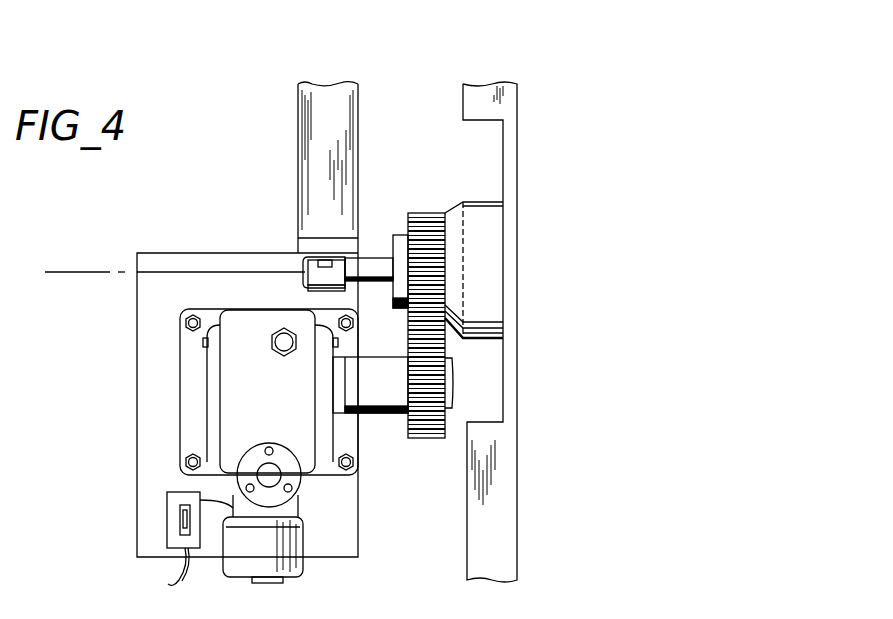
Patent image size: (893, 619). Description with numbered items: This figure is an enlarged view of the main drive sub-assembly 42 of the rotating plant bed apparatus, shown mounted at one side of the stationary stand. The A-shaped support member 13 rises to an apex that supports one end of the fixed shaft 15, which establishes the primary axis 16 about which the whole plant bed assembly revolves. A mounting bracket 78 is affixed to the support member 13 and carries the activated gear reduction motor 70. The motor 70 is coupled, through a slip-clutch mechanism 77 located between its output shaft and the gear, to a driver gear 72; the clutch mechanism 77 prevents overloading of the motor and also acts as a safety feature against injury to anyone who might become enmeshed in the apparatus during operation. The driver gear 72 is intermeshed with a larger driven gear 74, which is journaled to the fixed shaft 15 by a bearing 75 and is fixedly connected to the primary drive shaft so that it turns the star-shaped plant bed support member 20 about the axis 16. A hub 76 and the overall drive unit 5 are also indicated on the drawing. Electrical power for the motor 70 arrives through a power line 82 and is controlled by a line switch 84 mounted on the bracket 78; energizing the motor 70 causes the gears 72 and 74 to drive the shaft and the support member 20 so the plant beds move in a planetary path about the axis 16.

The drive assembly 5 is at (252, 52).
The A-shaped support member 13 is at (333, 100).
The fixed shaft 15 is at (378, 262).
The primary axis 16 is at (56, 279).
The star-shaped plant bed support member 20 is at (506, 408).
The main drive sub-assembly 42 is at (120, 560).
The gear reduction motor 70 is at (305, 458).
The driver gear 72 is at (425, 440).
The driven gear 74 is at (432, 213).
The bearing 75 is at (400, 235).
The hub 76 is at (490, 207).
The slip-clutch mechanism 77 is at (380, 414).
The mounting bracket 78 is at (146, 360).
The power line 82 is at (184, 567).
The line switch 84 is at (172, 525).